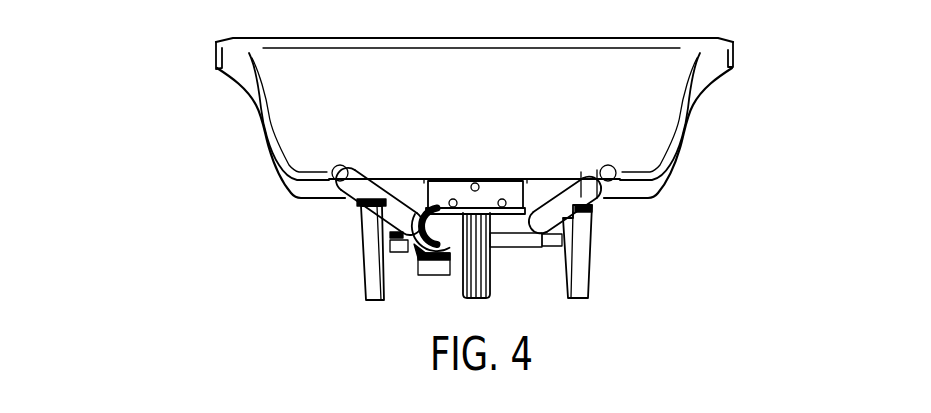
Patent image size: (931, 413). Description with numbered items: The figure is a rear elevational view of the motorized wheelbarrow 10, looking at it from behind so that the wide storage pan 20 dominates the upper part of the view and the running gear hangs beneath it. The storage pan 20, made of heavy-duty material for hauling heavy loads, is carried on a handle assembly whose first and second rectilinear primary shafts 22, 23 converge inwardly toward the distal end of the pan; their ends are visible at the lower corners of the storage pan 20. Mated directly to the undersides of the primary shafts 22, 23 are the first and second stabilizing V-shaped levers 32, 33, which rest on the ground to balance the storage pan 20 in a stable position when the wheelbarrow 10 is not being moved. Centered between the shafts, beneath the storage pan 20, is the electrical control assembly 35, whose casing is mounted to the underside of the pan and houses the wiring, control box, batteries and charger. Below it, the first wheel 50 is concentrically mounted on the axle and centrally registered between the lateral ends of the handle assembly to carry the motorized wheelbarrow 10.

The motorized wheelbarrow 10 is at (122, 306).
The storage pan 20 is at (647, 127).
The first rectilinear primary shaft 22 is at (343, 206).
The second rectilinear primary shaft 23 is at (600, 210).
The first stabilizing V-shaped lever 32 is at (372, 250).
The second stabilizing V-shaped lever 33 is at (578, 268).
The electrical control assembly 35 is at (512, 192).
The first wheel 50 is at (470, 298).